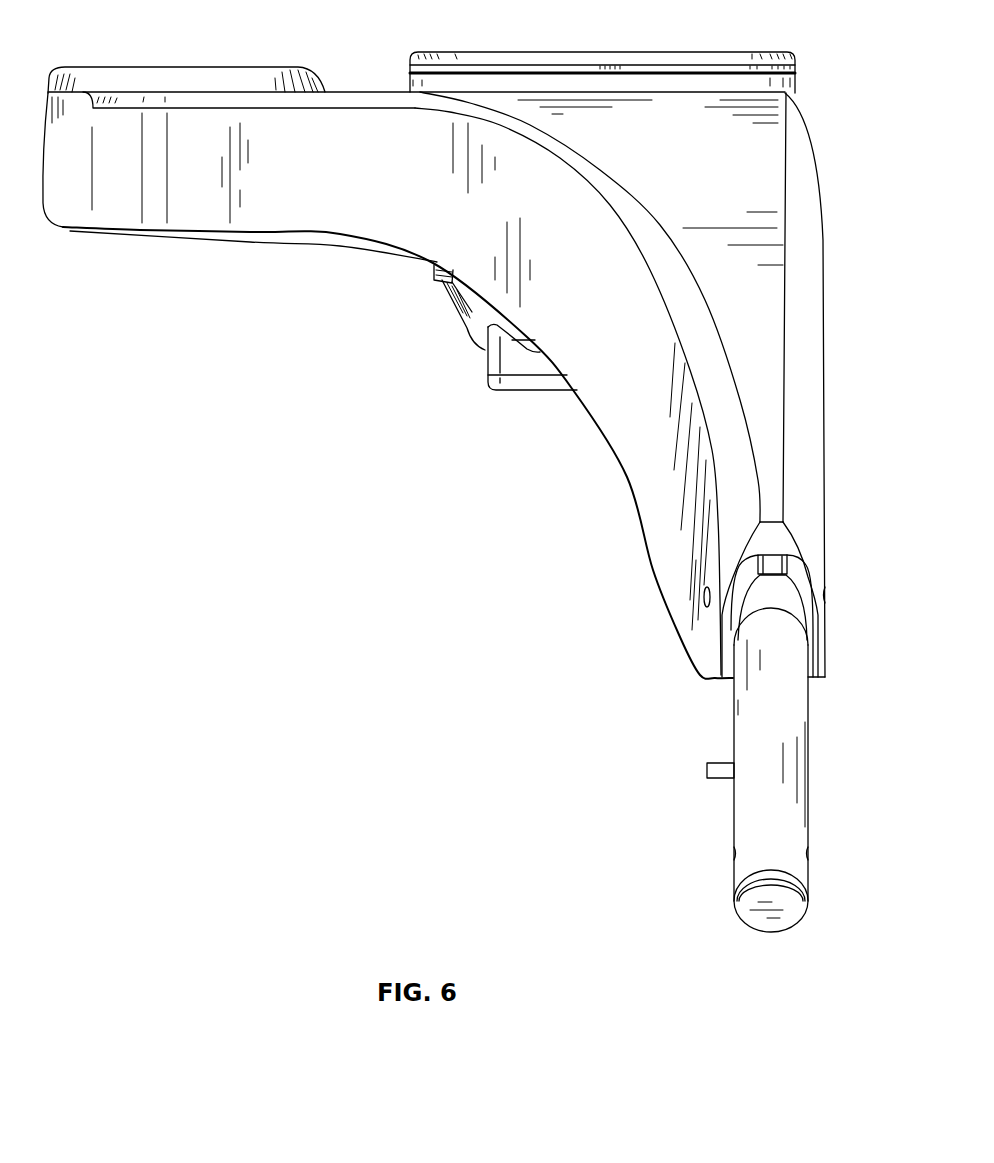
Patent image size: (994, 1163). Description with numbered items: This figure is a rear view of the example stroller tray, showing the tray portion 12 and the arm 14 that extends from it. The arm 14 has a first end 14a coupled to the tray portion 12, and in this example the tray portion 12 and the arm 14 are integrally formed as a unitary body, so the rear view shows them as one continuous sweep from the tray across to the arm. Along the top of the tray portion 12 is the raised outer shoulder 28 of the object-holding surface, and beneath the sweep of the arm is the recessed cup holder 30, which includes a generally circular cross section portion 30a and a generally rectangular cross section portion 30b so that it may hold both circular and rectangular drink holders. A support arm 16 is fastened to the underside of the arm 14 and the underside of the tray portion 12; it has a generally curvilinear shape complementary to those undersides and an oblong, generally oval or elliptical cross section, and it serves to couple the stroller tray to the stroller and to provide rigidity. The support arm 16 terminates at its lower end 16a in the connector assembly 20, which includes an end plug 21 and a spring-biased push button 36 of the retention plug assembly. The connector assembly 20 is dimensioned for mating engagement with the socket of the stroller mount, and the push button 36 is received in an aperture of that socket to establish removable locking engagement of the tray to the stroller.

The tray portion 12 is at (199, 207).
The arm 14 is at (807, 483).
The first end 14a is at (770, 158).
The support arm 16 is at (795, 708).
The shaft end 16a is at (800, 870).
The connector assembly 20 is at (753, 820).
The end plug 21 is at (792, 900).
The raised outer shoulder 28 is at (207, 83).
The recessed cup holder 30 is at (477, 327).
The generally circular cross section portion 30a is at (435, 268).
The generally rectangular cross section portion 30b is at (527, 382).
The spring-biased push button 36 is at (703, 770).